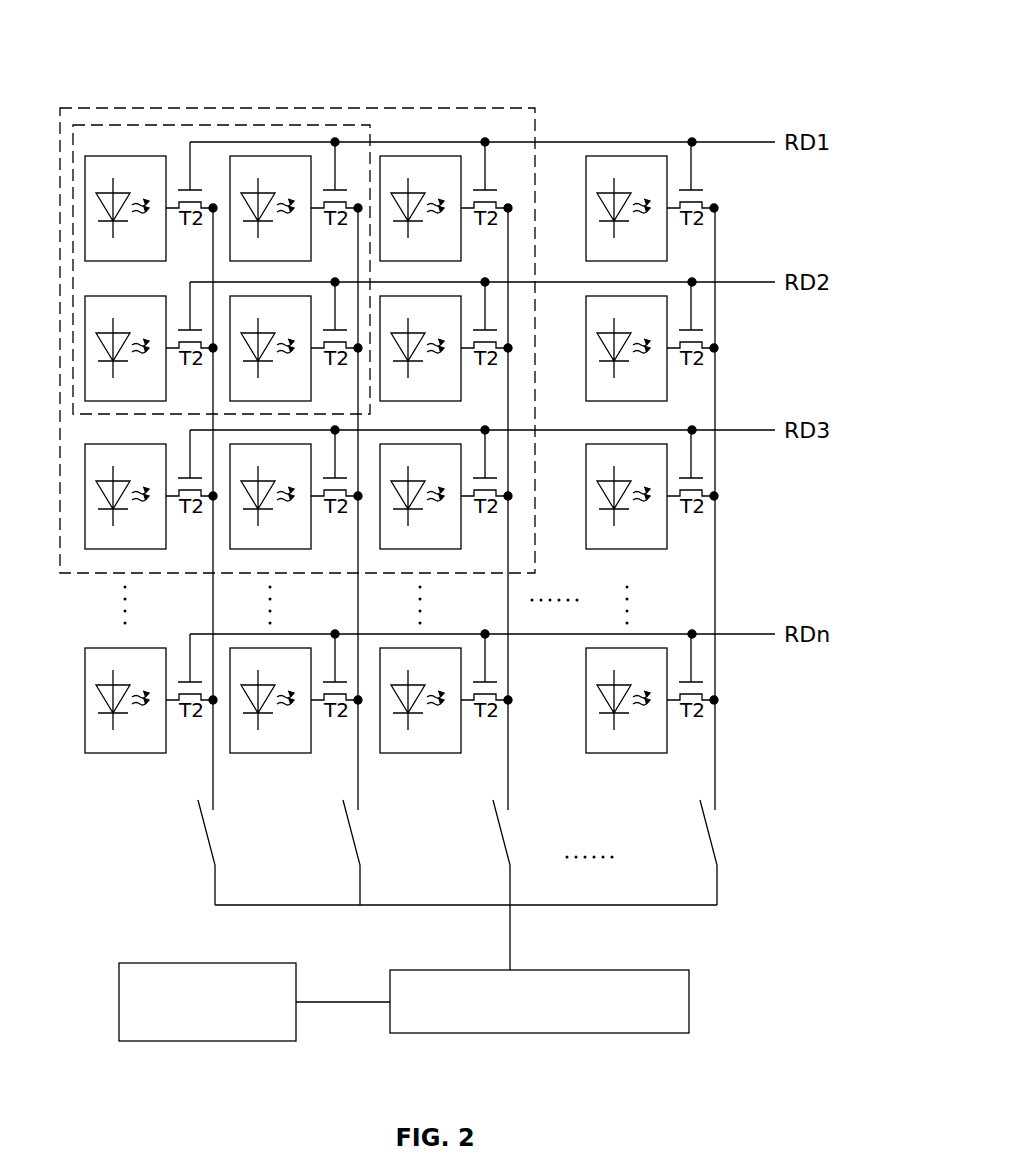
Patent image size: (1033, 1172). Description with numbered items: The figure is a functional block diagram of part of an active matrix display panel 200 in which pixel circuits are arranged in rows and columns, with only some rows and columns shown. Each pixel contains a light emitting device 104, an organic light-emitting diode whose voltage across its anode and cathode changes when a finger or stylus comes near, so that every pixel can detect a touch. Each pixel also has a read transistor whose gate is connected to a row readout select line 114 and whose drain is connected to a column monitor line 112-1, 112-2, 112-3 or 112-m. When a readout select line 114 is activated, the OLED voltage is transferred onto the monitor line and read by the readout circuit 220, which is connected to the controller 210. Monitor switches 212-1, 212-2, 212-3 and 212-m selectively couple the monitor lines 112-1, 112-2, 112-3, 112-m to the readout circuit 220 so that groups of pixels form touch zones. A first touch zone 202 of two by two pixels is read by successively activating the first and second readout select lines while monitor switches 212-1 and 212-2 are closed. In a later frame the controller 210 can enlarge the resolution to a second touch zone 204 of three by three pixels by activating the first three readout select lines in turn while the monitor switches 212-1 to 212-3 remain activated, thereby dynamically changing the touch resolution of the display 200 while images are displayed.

The electronic video display system or panel 200 is at (777, 48).
The first touch zone 202 is at (133, 124).
The second touch zone 204 is at (228, 108).
The light emitting device 104 is at (112, 155).
The readout select line 114 is at (181, 140).
The monitor line 112-1 is at (212, 760).
The monitor line 112-2 is at (357, 760).
The monitor line 112-3 is at (507, 760).
The monitor line 112-m is at (714, 760).
The monitor switch 212-1 is at (207, 838).
The monitor switch 212-2 is at (353, 838).
The monitor switch 212-3 is at (503, 838).
The monitor switch 212-m is at (710, 838).
The controller 210 is at (118, 1003).
The readout circuit 220 is at (690, 1000).